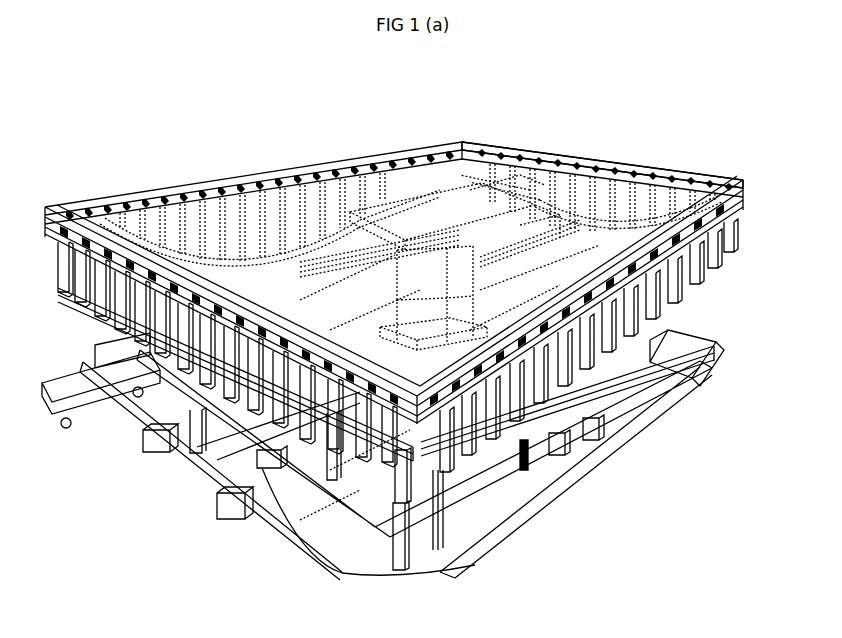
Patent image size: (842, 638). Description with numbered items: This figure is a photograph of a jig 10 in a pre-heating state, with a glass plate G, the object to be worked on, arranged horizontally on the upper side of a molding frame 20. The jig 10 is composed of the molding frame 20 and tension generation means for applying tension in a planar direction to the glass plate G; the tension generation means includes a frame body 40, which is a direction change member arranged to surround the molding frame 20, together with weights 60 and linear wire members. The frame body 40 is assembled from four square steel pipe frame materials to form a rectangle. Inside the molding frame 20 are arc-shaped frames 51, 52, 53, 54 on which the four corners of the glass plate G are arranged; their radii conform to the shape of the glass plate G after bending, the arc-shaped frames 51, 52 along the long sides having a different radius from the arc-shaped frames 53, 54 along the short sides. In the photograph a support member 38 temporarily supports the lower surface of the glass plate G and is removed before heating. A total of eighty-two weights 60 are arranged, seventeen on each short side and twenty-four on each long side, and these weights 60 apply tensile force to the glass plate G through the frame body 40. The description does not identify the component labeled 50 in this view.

The jig 10 is at (632, 347).
The molding frame 20 is at (452, 470).
The support member 38 is at (462, 297).
The frame body 40 is at (280, 540).
The upper frame 50 is at (633, 190).
The arc-shaped frame 51 is at (327, 237).
The arc-shaped frame 52 is at (682, 355).
The arc-shaped frame 53 is at (590, 203).
The arc-shaped frame 54 is at (175, 420).
The weight 60 is at (589, 430).
The glass plate G is at (490, 188).